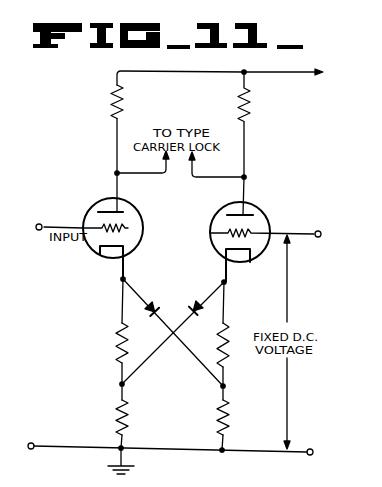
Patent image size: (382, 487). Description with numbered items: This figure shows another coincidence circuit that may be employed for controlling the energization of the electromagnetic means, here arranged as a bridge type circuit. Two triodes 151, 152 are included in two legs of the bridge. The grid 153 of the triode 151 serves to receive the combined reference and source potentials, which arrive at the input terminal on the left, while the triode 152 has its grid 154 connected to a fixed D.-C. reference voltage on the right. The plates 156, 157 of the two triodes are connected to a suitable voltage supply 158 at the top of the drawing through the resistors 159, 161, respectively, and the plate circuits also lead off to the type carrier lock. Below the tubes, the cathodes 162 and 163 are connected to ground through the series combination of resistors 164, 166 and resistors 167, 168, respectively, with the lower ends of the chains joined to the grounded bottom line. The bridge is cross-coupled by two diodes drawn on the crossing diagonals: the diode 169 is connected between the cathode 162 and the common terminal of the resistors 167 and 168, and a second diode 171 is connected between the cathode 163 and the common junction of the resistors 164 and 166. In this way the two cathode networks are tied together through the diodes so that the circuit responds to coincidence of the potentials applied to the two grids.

The triode 151 is at (86, 214).
The triode 152 is at (266, 212).
The grid 153 is at (129, 228).
The grid 154 is at (256, 231).
The plate 156 is at (107, 210).
The plate 157 is at (247, 205).
The voltage supply 158 is at (293, 76).
The resistor 159 is at (111, 94).
The resistor 161 is at (252, 106).
The cathode 162 is at (101, 256).
The cathode 163 is at (250, 262).
The resistor 164 is at (115, 345).
The resistor 166 is at (112, 406).
The resistor 167 is at (229, 363).
The resistor 168 is at (230, 415).
The diode 169 is at (155, 295).
The second diode 171 is at (198, 297).